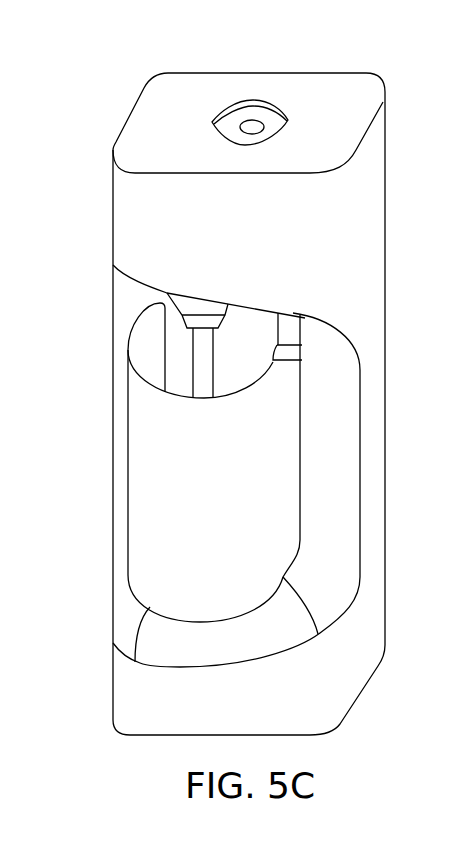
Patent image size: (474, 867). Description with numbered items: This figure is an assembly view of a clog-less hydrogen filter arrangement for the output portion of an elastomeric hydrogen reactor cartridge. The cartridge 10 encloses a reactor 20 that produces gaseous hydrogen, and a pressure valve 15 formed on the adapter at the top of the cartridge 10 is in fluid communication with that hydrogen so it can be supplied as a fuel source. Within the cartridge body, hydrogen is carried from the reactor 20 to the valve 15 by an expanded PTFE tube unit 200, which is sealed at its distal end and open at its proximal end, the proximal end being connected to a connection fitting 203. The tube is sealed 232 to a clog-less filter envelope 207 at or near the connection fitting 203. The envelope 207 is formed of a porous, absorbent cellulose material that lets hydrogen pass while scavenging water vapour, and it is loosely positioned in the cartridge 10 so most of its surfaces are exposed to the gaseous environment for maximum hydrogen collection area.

The cartridge 10 is at (74, 416).
The pressure valve 15 is at (264, 112).
The reactor 20 is at (283, 625).
The e-PTFE tube unit 200 is at (300, 473).
The connection fitting 203 is at (283, 330).
The clog-less filter envelope 207 is at (143, 487).
The seal 232 is at (295, 352).